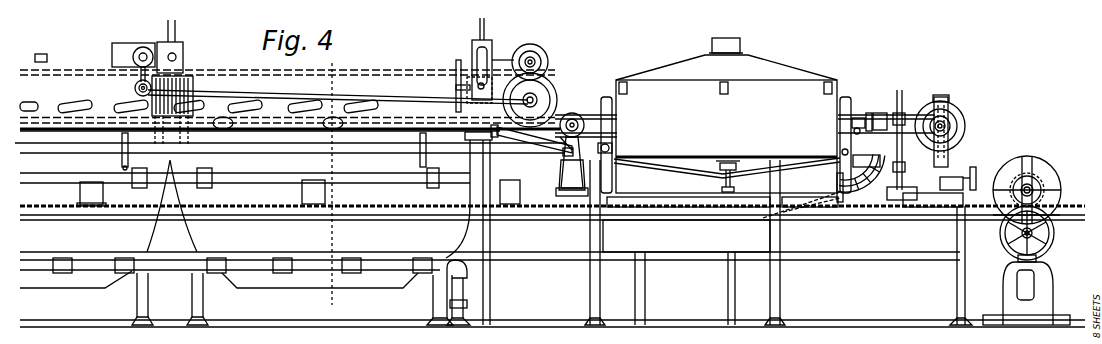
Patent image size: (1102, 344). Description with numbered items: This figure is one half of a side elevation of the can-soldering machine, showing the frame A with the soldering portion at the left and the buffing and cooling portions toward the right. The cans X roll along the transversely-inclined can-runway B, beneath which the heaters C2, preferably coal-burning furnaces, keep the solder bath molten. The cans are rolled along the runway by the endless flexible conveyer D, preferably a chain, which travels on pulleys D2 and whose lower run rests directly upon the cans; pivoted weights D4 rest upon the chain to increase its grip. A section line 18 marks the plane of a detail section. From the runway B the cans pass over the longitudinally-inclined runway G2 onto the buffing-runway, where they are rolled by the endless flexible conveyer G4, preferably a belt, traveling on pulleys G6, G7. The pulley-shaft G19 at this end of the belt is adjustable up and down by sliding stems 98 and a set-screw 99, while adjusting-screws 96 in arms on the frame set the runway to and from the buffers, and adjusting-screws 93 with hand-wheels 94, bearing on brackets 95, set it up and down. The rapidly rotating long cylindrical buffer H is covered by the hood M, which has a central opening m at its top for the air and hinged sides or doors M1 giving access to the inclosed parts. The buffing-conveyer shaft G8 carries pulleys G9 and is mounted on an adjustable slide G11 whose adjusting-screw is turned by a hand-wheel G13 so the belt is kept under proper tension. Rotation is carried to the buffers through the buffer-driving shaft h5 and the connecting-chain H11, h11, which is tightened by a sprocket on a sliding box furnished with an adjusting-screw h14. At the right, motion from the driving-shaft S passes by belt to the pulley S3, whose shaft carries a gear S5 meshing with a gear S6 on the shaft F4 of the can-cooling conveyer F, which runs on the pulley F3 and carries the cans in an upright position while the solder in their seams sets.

The endless flexible conveyer D is at (387, 72).
The pulley D2 is at (556, 74).
The pivoted weights D4 is at (83, 103).
The cans X is at (235, 88).
The section line 18 18 is at (342, 65).
The can-runway B is at (260, 138).
The heaters C2 is at (316, 220).
The frame A is at (505, 288).
The can-cooling endless conveyer F is at (538, 208).
The longitudinally-inclined runway G2 is at (529, 146).
The sliding stems 98 is at (568, 152).
The set-screw 99 is at (567, 150).
The pulley G6 is at (575, 113).
The pulley-shaft G19 is at (583, 113).
The adjusting-screws 96 is at (617, 145).
The central opening m is at (726, 36).
The hood M is at (726, 67).
The hinged sides or doors M1 is at (726, 136).
The hand-wheels 94 is at (707, 170).
The brackets 95 is at (731, 180).
The adjusting-screws 93 is at (727, 190).
The rotary cylindrical buffer H is at (863, 190).
The adjusting-screw h14 is at (860, 115).
The connecting-chain h11 is at (878, 115).
The buffer-driving shaft h5 is at (895, 115).
The endless flexible conveyer G4 is at (910, 115).
The pulleys G9 is at (953, 102).
The pulley G7 is at (949, 118).
The buffing-conveyer shaft G8 is at (951, 133).
The hand-wheel G13 is at (977, 170).
The connecting-chain H11 is at (903, 158).
The adjustable slide G11 is at (905, 165).
The pulley S3 is at (1050, 162).
The driving-shaft S is at (1040, 188).
The gear S5 is at (1045, 193).
The gear S6 is at (1060, 213).
The pulley F3 is at (1055, 233).
The shaft of the cooling-conveyers F4 is at (1053, 250).